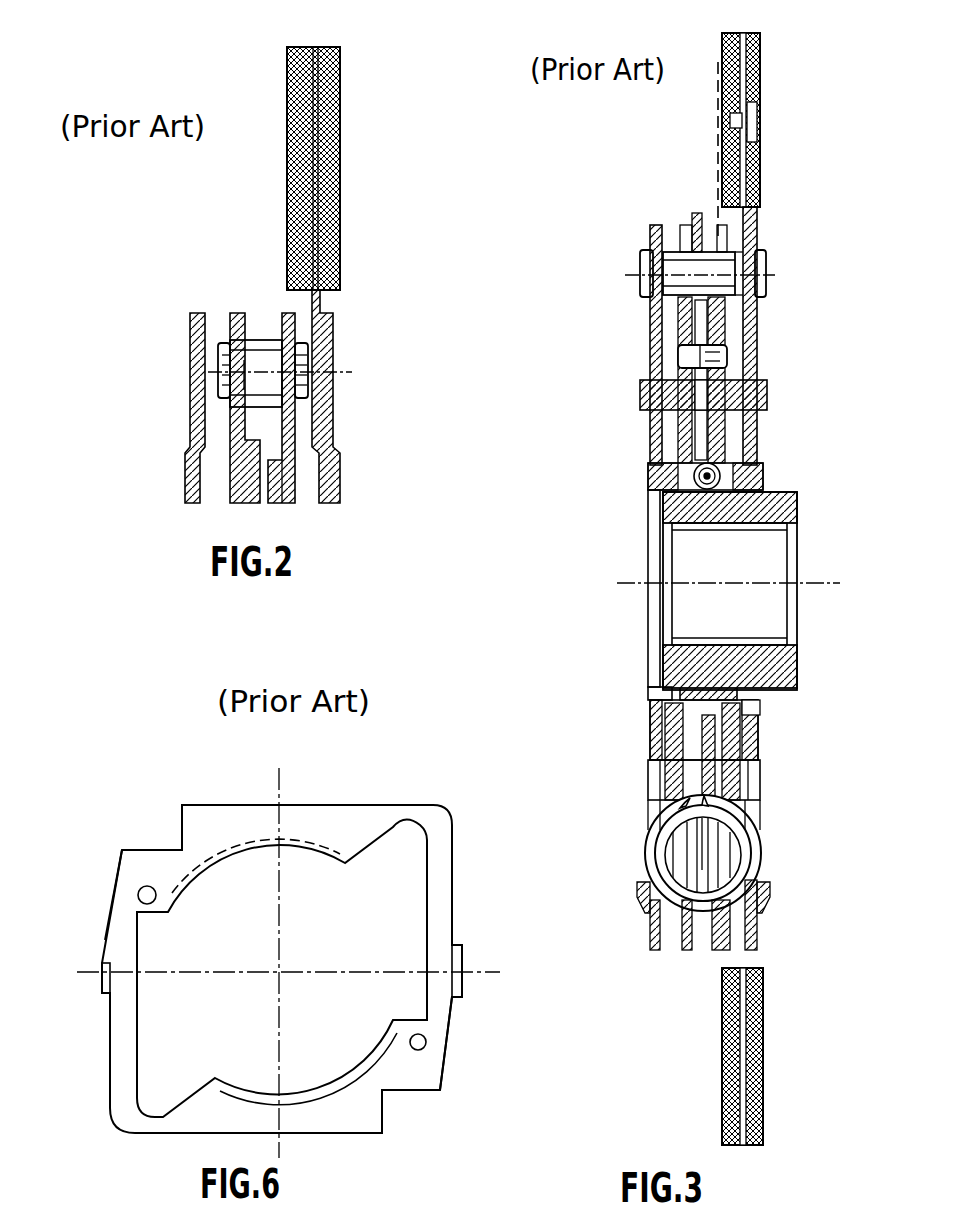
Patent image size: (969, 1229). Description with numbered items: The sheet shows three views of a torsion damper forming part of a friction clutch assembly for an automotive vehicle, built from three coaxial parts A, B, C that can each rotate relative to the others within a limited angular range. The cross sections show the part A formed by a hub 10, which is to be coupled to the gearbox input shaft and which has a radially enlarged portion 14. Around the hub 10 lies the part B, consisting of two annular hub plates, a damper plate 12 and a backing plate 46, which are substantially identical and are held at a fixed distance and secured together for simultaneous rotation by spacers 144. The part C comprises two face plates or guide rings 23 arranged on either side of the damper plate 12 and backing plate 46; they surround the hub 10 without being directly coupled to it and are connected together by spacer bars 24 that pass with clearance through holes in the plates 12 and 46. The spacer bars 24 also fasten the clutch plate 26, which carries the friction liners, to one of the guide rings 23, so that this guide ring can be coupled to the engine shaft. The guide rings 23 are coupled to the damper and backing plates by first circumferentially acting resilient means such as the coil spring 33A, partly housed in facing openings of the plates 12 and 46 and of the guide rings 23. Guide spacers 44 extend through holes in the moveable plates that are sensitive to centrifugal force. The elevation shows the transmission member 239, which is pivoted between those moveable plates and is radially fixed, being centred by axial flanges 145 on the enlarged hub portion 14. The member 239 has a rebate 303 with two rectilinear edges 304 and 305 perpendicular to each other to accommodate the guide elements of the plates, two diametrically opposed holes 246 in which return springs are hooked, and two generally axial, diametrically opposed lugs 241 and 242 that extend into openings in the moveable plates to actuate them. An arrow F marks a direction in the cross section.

In FIG. 3, the hub 10 is at (782, 500).
In FIG. 2, the damper plate 12 is at (285, 322).
In FIG. 3, the damper plate 12 is at (727, 952).
In FIG. 3, the radially enlarged portion 14 is at (755, 710).
In FIG. 2, the face plate 23 is at (195, 378).
In FIG. 3, the face plate 23 is at (655, 218).
In FIG. 3, the spacer bar 24 is at (640, 268).
In FIG. 3, the clutch plate 26 is at (754, 962).
In FIG. 3, the first circumferentially acting resilient means 33A is at (745, 842).
In FIG. 3, the guide spacer 44 is at (678, 356).
In FIG. 2, the backing plate 46 is at (233, 322).
In FIG. 3, the backing plate 46 is at (687, 952).
In FIG. 2, the spacer 144 is at (262, 345).
In FIG. 6, the axial flange 145 is at (300, 1092).
In FIG. 6, the transmission member 239 is at (385, 800).
In FIG. 6, the lug 241 is at (103, 995).
In FIG. 6, the lug 242 is at (462, 960).
In FIG. 6, the hole 246 is at (138, 897).
In FIG. 6, the rebate 303 is at (165, 845).
In FIG. 6, the rectilinear edge 304 is at (127, 848).
In FIG. 6, the rectilinear edge 305 is at (178, 825).
In FIG. 3, the coaxial part A is at (660, 656).
In FIG. 3, the coaxial part B is at (686, 198).
In FIG. 3, the coaxial part C is at (764, 85).
In FIG. 3, the force direction F is at (630, 555).